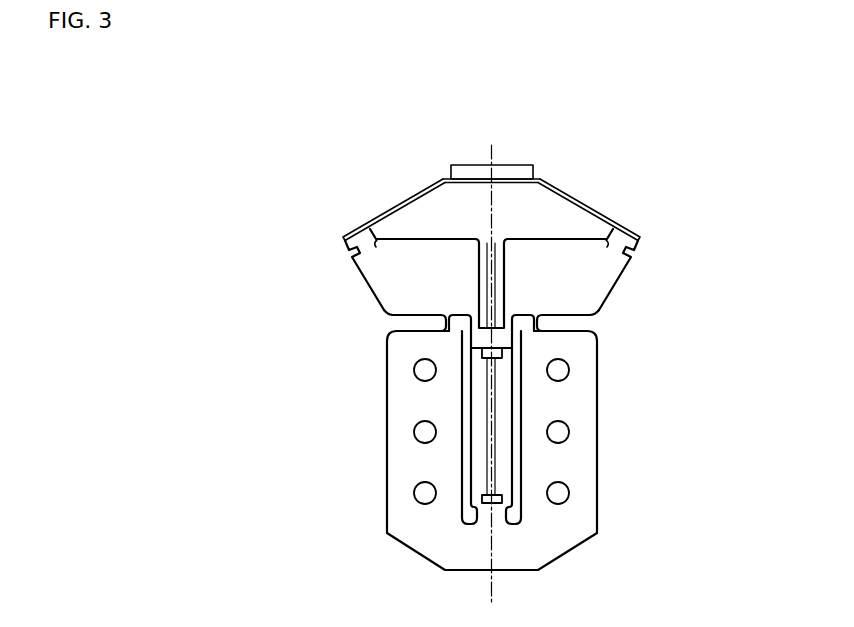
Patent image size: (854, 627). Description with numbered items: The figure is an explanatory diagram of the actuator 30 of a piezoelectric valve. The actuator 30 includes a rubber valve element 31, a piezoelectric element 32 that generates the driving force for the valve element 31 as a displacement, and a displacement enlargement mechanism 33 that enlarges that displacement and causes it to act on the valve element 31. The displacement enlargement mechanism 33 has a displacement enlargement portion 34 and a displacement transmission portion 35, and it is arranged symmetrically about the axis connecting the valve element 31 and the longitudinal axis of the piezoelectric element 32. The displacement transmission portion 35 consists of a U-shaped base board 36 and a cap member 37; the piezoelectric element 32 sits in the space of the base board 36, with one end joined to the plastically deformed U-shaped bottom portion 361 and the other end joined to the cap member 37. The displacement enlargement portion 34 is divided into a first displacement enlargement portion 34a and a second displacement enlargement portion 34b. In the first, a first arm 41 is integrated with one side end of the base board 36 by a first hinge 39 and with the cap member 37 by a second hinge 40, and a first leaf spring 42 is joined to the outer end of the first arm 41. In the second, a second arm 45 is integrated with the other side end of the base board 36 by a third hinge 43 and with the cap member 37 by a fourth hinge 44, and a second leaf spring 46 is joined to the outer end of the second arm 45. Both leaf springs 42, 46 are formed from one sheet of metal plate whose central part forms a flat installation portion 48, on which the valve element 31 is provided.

The actuator 30 is at (551, 98).
The valve element 31 is at (483, 172).
The piezoelectric element 32 is at (497, 470).
The displacement enlargement mechanism 33 is at (663, 362).
The displacement enlargement portion 34 is at (655, 282).
The first displacement enlargement portion 34a is at (617, 155).
The second displacement enlargement portion 34b is at (363, 163).
The displacement transmission portion 35 is at (629, 453).
The U-shaped base board 36 is at (423, 515).
The U-shaped bottom portion 361 is at (488, 525).
The cap member 37 is at (452, 336).
The first hinge 39 is at (538, 318).
The second hinge 40 is at (515, 317).
The first arm 41 is at (598, 289).
The first leaf spring 42 is at (588, 208).
The third hinge 43 is at (445, 318).
The fourth hinge 44 is at (468, 317).
The second arm 45 is at (385, 289).
The second leaf spring 46 is at (397, 205).
The installation portion 48 is at (507, 182).